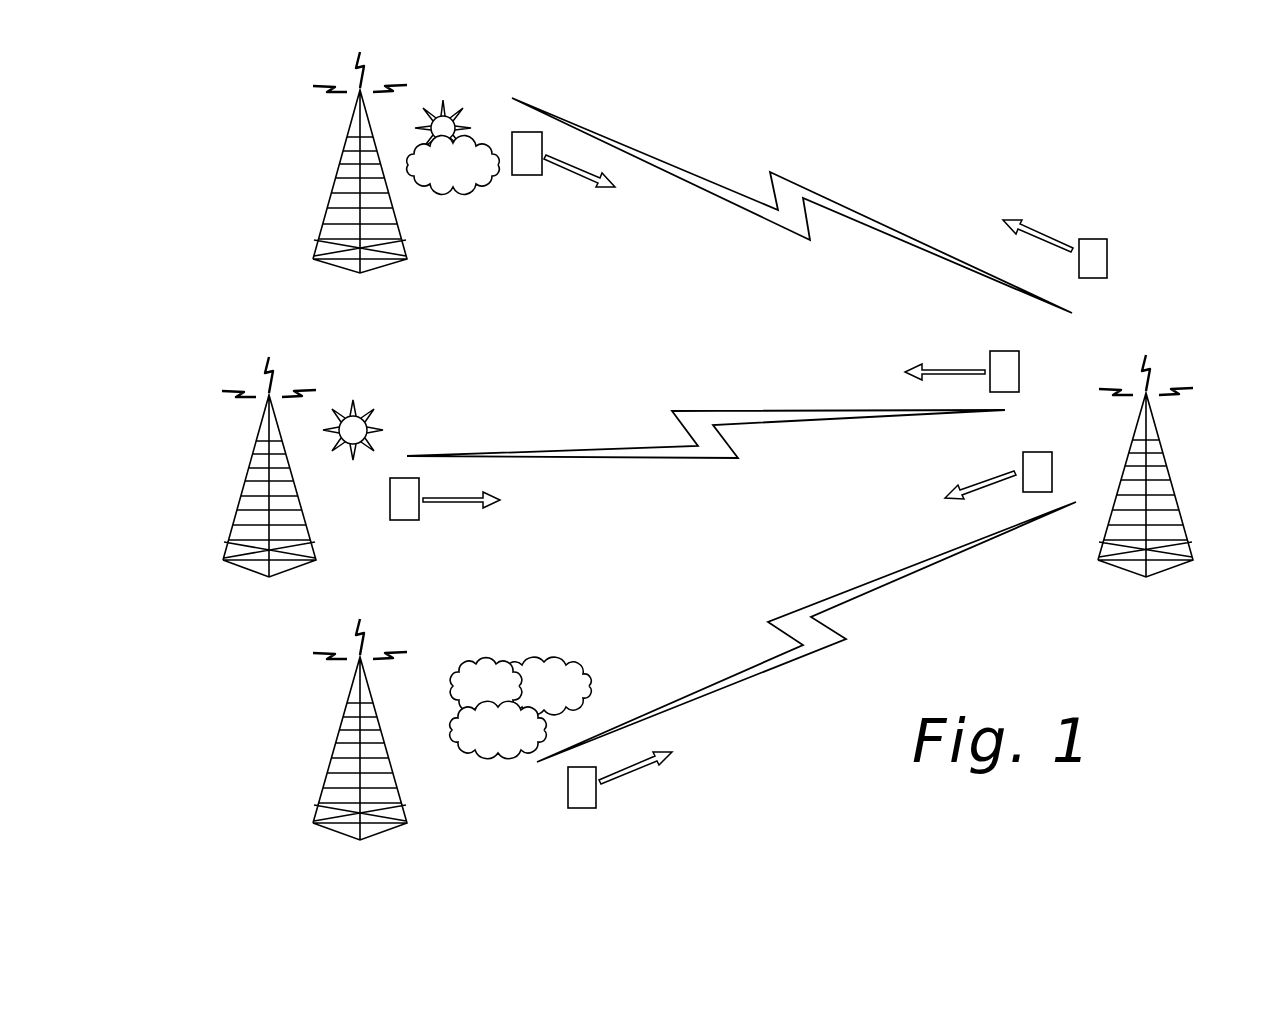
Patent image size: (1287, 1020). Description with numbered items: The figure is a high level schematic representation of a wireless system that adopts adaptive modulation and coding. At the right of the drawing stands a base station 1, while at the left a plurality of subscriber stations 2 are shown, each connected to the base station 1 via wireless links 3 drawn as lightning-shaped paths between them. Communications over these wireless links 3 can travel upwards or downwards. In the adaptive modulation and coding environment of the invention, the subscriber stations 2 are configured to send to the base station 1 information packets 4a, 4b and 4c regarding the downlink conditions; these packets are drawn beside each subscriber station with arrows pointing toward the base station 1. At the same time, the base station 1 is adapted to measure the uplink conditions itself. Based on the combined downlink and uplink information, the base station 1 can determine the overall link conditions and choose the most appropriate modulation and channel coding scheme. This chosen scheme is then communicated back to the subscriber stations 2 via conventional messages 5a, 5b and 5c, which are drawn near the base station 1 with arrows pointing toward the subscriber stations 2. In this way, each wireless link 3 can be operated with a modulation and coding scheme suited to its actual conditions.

The base station 1 is at (1165, 487).
The subscriber stations 2 is at (347, 185).
The wireless links 3 is at (787, 192).
The information packet 4a is at (530, 150).
The information packet 4b is at (405, 494).
The information packet 4c is at (585, 790).
The message 5a is at (1093, 248).
The message 5b is at (1003, 365).
The message 5c is at (1035, 464).